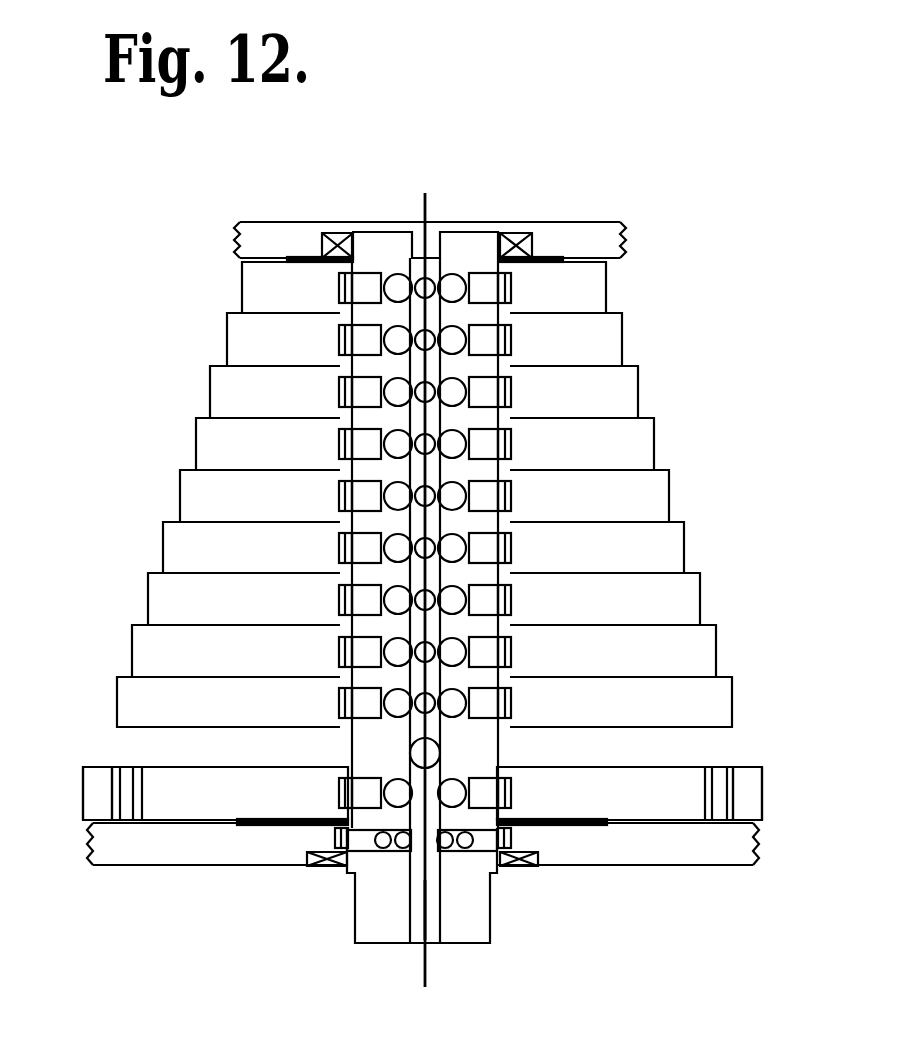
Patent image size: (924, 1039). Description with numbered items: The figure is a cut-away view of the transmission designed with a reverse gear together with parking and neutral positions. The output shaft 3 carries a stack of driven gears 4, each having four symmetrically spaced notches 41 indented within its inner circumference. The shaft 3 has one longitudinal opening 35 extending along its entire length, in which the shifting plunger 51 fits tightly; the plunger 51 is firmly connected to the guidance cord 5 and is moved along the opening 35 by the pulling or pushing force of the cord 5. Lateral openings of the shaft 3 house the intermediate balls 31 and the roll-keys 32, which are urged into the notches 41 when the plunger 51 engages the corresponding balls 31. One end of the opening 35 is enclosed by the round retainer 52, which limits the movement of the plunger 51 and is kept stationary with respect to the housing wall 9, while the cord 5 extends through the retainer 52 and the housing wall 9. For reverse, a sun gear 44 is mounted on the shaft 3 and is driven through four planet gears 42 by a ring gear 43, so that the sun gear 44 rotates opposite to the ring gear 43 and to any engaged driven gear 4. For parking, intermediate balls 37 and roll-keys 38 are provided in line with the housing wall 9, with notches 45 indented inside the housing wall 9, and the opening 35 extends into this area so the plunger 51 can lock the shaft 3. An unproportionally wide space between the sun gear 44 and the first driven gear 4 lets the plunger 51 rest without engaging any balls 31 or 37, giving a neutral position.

The output shaft 3 is at (387, 258).
The driven gear 4 is at (567, 692).
The guidance cord 5 is at (418, 948).
The housing wall 9 is at (562, 243).
The intermediate balls 31 is at (398, 548).
The roll-keys 32 is at (483, 287).
The longitudinal opening 35 is at (433, 268).
The intermediate balls 37 is at (445, 843).
The roll-keys 38 is at (365, 836).
The notches 41 is at (508, 402).
The planet gear 42 is at (128, 783).
The ring gear 43 is at (98, 800).
The sun gear 44 is at (223, 793).
The notches 45 is at (510, 835).
The shifting plunger 51 is at (420, 750).
The round retainer 52 is at (430, 920).